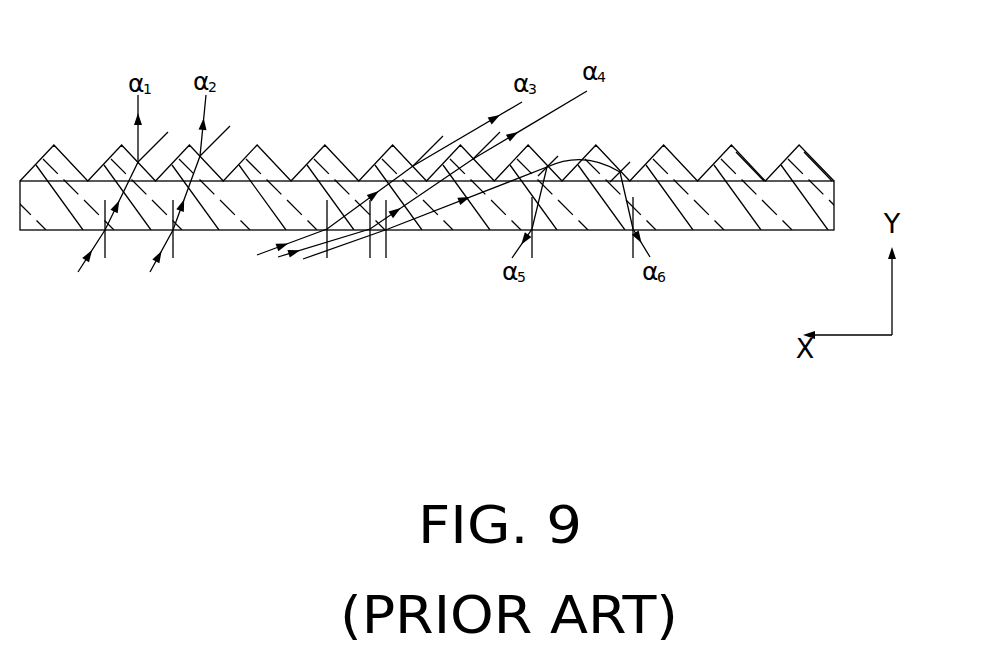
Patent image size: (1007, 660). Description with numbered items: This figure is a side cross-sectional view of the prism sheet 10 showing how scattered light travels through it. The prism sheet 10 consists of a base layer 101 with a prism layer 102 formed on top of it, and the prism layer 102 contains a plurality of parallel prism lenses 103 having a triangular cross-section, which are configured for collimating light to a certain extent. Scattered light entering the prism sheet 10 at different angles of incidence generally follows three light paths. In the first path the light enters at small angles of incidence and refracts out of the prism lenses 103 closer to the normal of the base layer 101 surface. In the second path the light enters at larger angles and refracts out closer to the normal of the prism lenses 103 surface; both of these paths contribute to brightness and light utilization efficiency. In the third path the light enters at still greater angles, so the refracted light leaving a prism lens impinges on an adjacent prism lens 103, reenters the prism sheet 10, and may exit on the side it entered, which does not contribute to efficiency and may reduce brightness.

The prism sheet 10 is at (368, 73).
The base layer 101 is at (427, 230).
The prism layer 102 is at (737, 152).
The prism lenses 103 is at (820, 164).